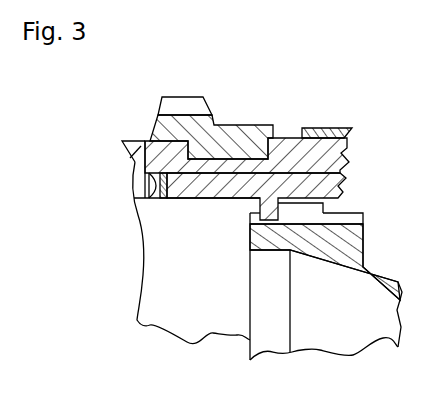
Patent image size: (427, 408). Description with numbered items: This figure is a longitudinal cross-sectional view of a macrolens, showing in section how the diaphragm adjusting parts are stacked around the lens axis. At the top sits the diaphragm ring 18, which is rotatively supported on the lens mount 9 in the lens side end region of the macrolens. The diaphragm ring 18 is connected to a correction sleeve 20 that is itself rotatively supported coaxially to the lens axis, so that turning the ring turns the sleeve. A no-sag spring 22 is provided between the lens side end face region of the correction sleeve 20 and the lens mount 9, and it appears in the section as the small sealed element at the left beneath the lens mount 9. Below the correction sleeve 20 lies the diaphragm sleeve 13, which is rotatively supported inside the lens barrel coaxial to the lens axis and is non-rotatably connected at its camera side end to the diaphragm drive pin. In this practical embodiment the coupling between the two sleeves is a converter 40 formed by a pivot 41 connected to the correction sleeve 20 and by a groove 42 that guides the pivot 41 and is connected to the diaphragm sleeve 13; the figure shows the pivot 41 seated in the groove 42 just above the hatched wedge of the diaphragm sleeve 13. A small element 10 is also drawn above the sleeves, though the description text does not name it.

The lens mount 9 is at (150, 146).
The cover element 10 is at (318, 127).
The diaphragm sleeve 13 is at (321, 305).
The diaphragm ring 18 is at (200, 110).
The correction sleeve 20 is at (318, 190).
The no-sag spring 22 is at (135, 206).
The converter 40 is at (243, 216).
The pivot 41 is at (257, 200).
The groove 42 is at (350, 219).